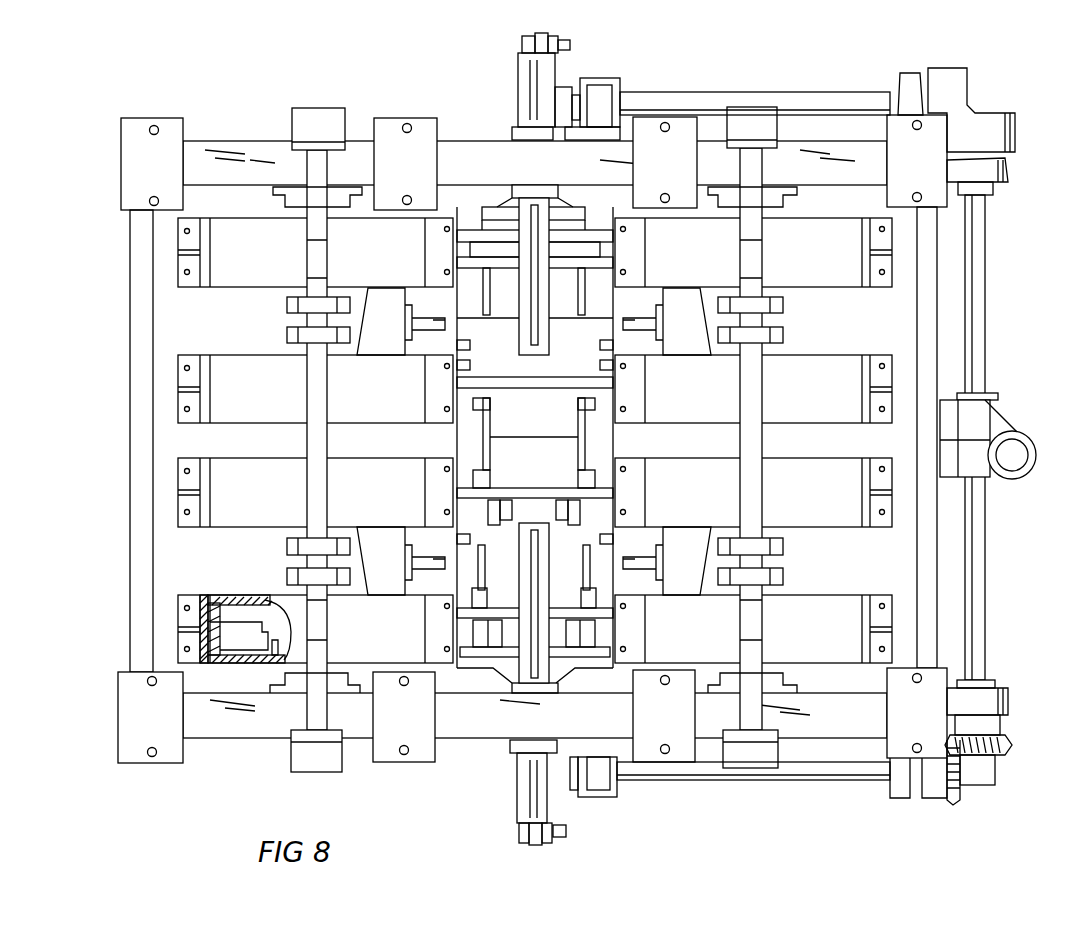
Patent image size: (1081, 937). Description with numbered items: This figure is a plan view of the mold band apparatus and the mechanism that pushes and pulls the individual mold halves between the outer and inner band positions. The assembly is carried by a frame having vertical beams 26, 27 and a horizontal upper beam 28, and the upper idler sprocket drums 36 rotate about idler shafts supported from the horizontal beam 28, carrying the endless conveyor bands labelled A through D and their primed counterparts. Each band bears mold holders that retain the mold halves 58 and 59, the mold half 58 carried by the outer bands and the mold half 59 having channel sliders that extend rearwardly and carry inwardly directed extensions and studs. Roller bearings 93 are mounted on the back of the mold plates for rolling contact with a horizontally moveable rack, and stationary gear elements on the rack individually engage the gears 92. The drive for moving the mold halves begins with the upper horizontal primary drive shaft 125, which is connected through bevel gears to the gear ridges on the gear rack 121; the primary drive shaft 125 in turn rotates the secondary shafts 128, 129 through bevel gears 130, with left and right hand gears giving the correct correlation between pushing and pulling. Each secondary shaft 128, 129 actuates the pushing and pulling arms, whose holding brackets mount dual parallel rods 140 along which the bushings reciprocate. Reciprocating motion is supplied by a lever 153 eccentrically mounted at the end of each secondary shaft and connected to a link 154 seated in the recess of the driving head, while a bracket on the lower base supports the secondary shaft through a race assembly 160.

The vertical beam 26 is at (152, 765).
The vertical beam 27 is at (137, 118).
The horizontal upper beam 28 is at (210, 152).
The upper idler sprocket drum 36 is at (222, 377).
The mold half 58 is at (520, 410).
The mold half 59 is at (527, 465).
The gear 92 is at (468, 507).
The roller bearing 93 is at (495, 505).
The gear rack 121 is at (1015, 452).
The upper horizontal primary drive shaft 125 is at (988, 380).
The secondary shaft 128 is at (778, 95).
The secondary shaft 129 is at (820, 785).
The bevel gear 130 is at (997, 755).
The parallel rod 140 is at (518, 67).
The lever 153 is at (555, 72).
The link 154 is at (523, 43).
The race assembly 160 is at (603, 797).